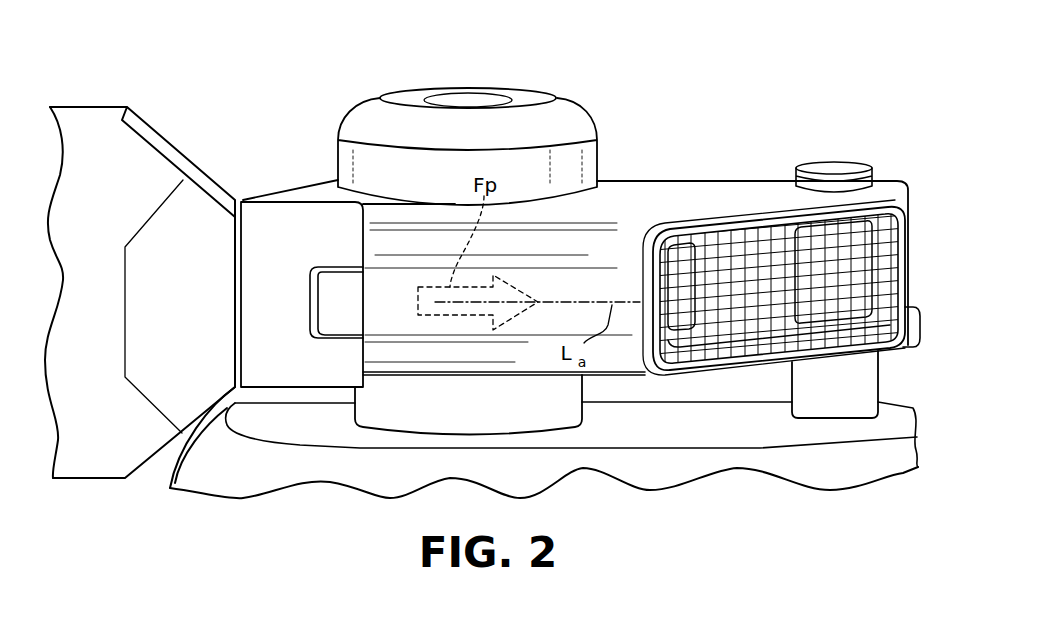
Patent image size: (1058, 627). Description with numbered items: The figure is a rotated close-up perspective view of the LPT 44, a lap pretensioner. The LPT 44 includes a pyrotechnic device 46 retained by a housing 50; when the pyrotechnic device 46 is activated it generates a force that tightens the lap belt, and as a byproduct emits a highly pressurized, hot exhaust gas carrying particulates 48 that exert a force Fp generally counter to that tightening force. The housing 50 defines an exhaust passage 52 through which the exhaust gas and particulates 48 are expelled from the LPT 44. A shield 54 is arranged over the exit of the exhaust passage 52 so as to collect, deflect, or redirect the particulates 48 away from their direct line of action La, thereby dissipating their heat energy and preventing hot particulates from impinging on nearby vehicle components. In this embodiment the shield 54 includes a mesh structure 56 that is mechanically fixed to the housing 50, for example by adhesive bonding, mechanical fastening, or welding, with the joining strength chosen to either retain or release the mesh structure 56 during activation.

The LPT 44 is at (387, 95).
The pyrotechnic device 46 is at (212, 181).
The particulates 48 is at (408, 302).
The housing 50 is at (677, 195).
The exhaust passage 52 is at (848, 200).
The shield 54 is at (915, 250).
The mesh structure 56 is at (905, 347).